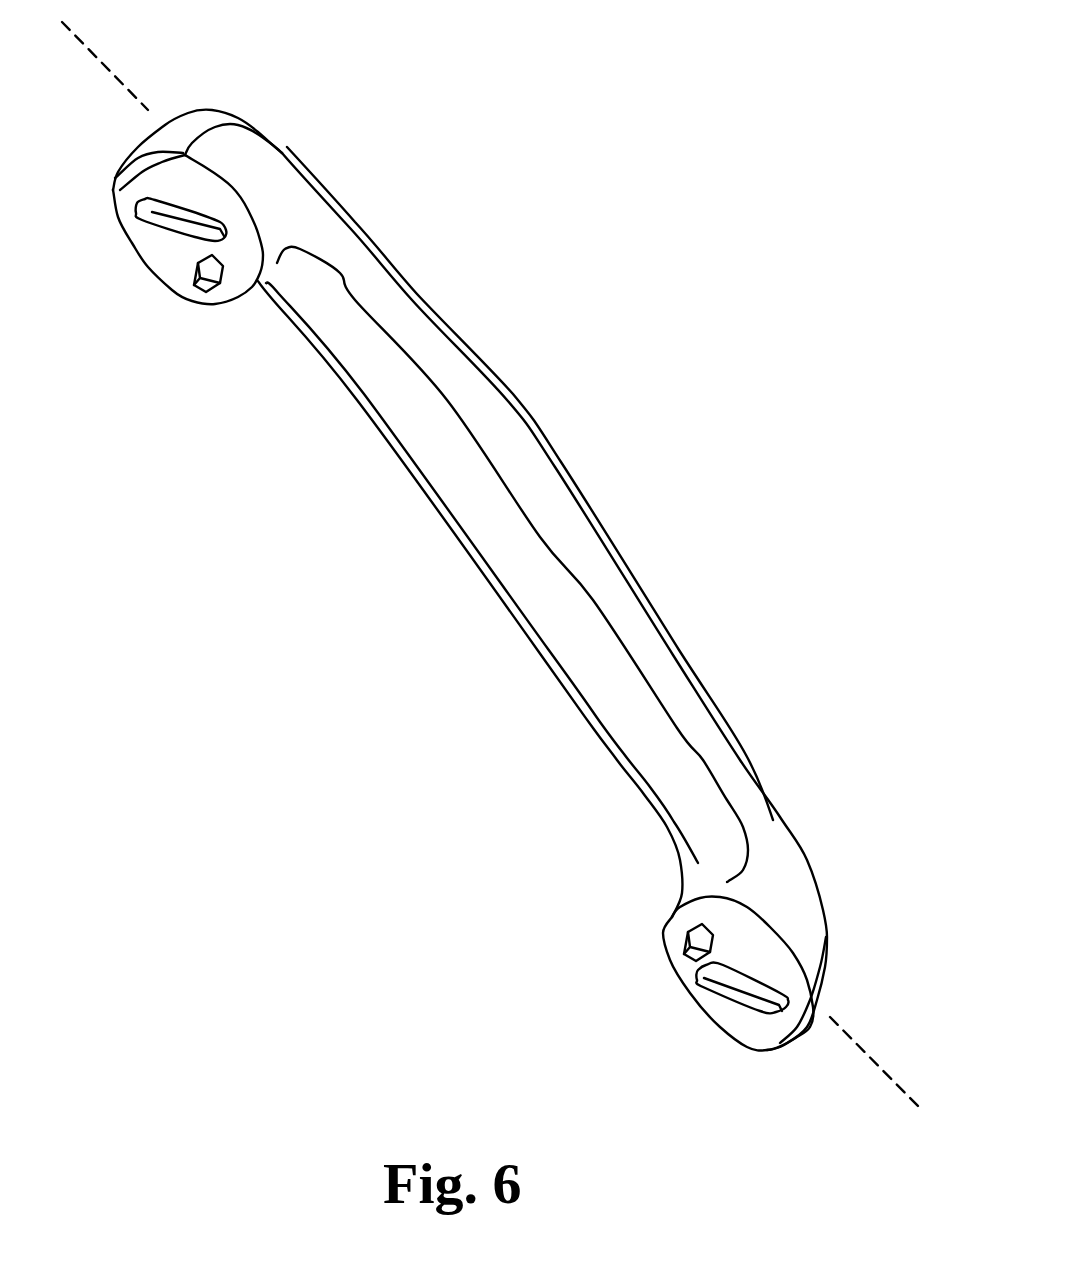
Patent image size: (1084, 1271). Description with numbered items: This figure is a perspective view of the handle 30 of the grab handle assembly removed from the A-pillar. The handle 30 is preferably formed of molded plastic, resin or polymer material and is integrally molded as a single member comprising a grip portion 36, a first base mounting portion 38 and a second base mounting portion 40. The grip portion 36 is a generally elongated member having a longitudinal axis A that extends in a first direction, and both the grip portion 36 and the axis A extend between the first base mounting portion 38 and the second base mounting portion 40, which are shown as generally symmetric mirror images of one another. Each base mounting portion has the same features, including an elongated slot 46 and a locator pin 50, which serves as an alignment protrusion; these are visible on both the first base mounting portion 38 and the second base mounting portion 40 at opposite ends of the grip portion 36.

The handle 30 is at (868, 848).
The grip portion 36 is at (443, 326).
The first base mounting portion 38 is at (257, 162).
The second base mounting portion 40 is at (787, 902).
The elongated slot 46 is at (175, 225).
The locator pin 50 is at (220, 277).
The longitudinal axis A is at (857, 1043).